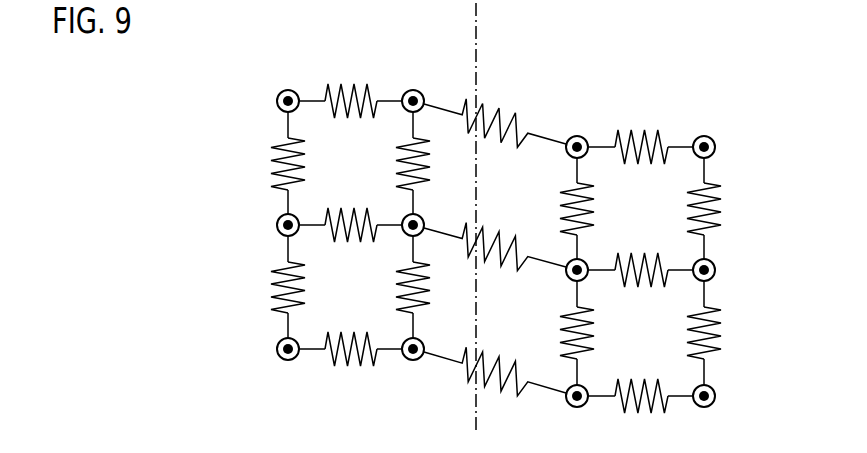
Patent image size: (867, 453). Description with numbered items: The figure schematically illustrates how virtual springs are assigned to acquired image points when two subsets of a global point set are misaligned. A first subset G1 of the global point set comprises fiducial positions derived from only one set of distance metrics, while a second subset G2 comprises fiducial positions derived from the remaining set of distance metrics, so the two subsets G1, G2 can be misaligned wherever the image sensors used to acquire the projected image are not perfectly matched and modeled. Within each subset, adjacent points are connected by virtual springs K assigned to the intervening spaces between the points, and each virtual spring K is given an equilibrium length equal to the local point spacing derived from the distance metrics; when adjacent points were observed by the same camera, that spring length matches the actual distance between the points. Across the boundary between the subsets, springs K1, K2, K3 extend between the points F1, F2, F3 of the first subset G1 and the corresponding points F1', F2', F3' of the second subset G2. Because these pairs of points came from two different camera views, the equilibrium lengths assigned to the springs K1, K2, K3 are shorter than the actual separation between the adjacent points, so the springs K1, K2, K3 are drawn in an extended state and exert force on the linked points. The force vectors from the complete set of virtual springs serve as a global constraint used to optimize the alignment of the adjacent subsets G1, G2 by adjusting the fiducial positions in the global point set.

The first subset of the global point set G1 is at (350, 192).
The second subset of the global point set G2 is at (640, 216).
The point F1 is at (435, 86).
The point F2 is at (435, 211).
The point F3 is at (435, 336).
The point F1' is at (565, 109).
The point F2' is at (558, 234).
The point F3' is at (553, 361).
The spring K1 is at (484, 107).
The spring K2 is at (470, 248).
The spring K3 is at (478, 393).
The virtual spring K is at (277, 272).